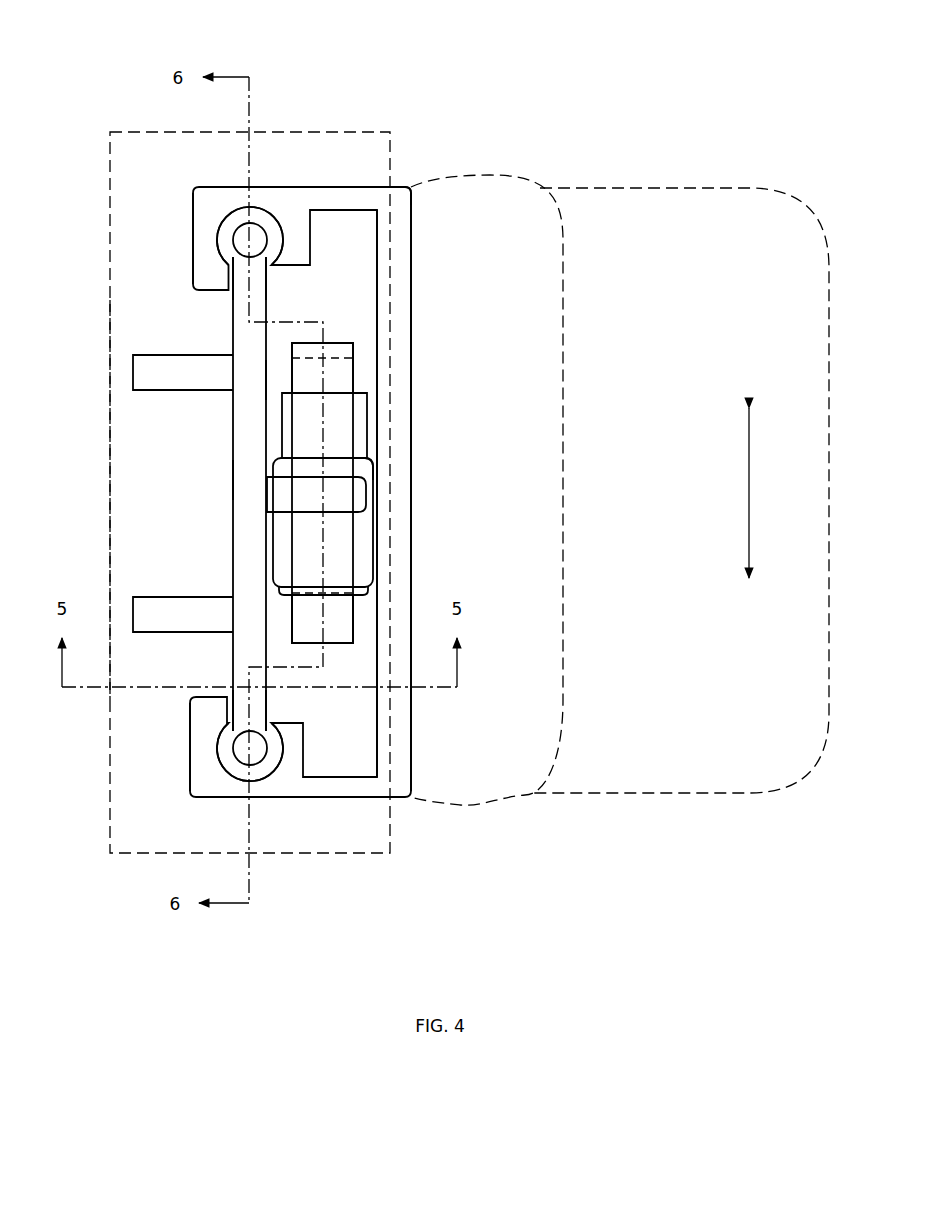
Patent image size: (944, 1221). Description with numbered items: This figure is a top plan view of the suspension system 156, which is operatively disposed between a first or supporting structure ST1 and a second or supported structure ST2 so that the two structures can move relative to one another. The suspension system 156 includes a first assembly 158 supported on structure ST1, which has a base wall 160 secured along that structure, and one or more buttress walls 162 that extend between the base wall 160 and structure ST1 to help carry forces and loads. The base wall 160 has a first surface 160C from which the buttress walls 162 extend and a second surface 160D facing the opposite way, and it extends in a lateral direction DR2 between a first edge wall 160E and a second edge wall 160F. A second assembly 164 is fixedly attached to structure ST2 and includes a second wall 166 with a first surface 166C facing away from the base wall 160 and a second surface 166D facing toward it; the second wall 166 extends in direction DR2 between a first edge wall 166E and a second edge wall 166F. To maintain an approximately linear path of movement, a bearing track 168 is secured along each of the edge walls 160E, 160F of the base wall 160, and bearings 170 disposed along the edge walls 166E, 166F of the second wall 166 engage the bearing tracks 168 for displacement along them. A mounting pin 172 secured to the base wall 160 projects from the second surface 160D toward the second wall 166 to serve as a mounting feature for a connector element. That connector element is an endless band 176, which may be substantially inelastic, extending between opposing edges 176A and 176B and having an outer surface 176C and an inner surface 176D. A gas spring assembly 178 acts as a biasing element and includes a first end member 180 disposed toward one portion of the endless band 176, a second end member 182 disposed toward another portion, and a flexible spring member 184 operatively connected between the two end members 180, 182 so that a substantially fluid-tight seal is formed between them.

The suspension system 156 is at (492, 132).
The first assembly 158 is at (138, 286).
The base wall 160 is at (238, 446).
The first surface 160C is at (235, 478).
The second surface 160D is at (273, 380).
The first edge wall 160E is at (249, 260).
The second edge wall 160F is at (236, 727).
The buttress walls 162 is at (147, 390).
The second assembly 164 is at (410, 165).
The second wall 166 is at (408, 324).
The first surface 166C is at (413, 362).
The second surface 166D is at (378, 275).
The first edge wall 166E is at (288, 200).
The second edge wall 166F is at (298, 787).
The bearing track 168 is at (243, 240).
The bearings 170 is at (240, 218).
The mounting pin 172 is at (277, 492).
The endless band 176 is at (350, 379).
The first edge 176A is at (292, 613).
The second edge 176B is at (353, 618).
The outer surface 176C is at (347, 340).
The inner surface 176D is at (332, 628).
The gas spring assembly 178 is at (380, 456).
The first end member 180 is at (366, 586).
The second end member 182 is at (364, 430).
The flexible spring member 184 is at (363, 528).
The first structure ST1 is at (175, 132).
The second structure ST2 is at (690, 189).
The second direction DR2 is at (749, 465).